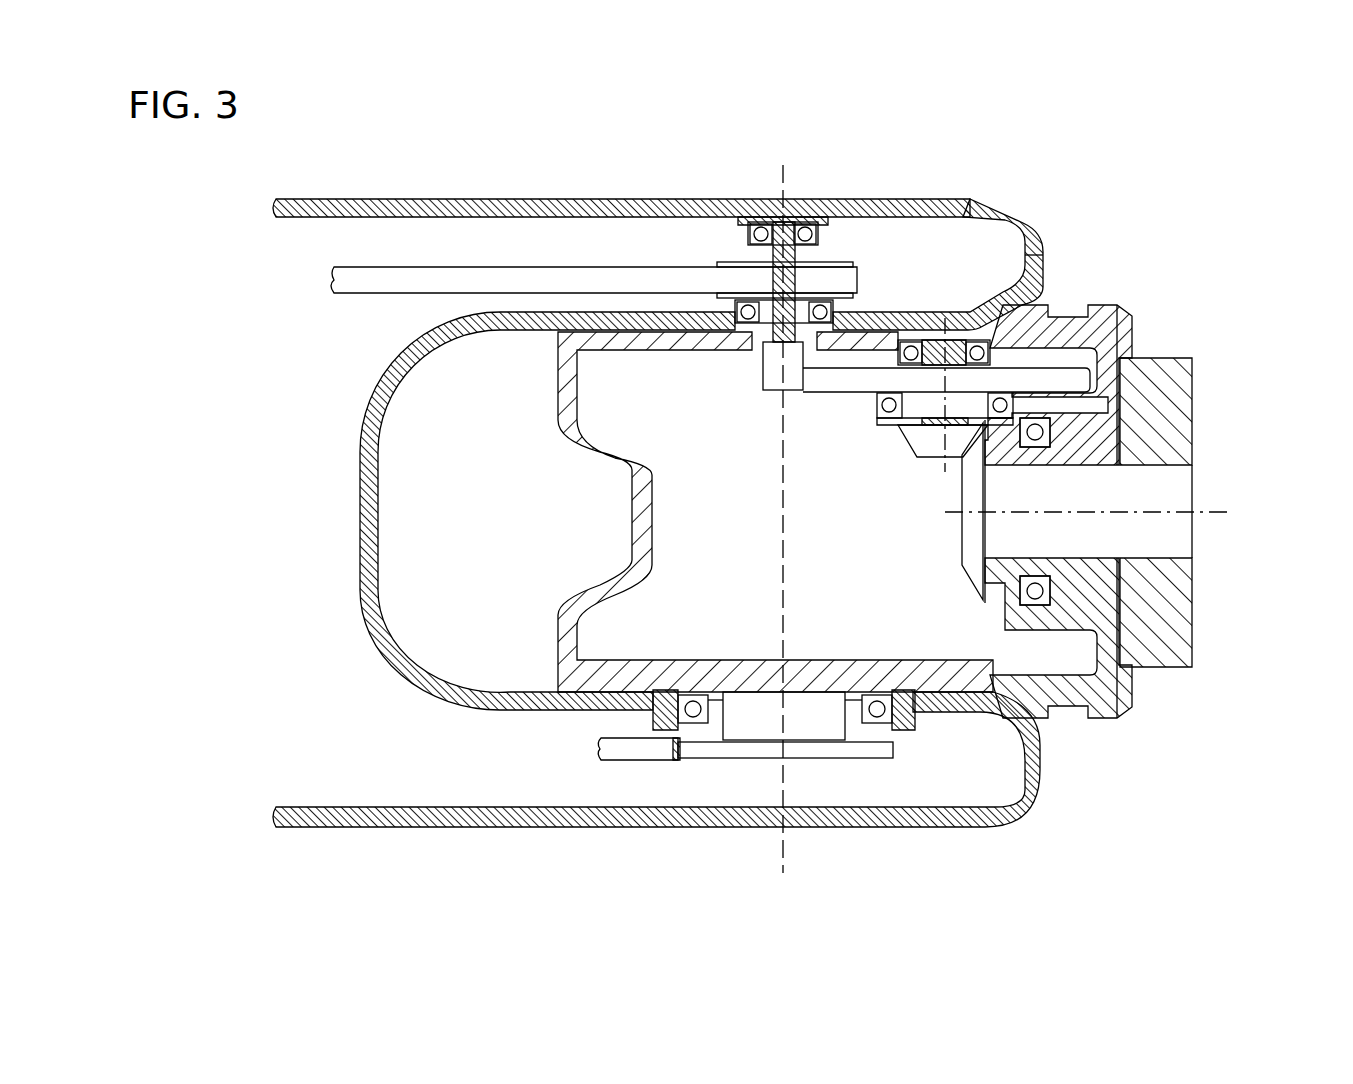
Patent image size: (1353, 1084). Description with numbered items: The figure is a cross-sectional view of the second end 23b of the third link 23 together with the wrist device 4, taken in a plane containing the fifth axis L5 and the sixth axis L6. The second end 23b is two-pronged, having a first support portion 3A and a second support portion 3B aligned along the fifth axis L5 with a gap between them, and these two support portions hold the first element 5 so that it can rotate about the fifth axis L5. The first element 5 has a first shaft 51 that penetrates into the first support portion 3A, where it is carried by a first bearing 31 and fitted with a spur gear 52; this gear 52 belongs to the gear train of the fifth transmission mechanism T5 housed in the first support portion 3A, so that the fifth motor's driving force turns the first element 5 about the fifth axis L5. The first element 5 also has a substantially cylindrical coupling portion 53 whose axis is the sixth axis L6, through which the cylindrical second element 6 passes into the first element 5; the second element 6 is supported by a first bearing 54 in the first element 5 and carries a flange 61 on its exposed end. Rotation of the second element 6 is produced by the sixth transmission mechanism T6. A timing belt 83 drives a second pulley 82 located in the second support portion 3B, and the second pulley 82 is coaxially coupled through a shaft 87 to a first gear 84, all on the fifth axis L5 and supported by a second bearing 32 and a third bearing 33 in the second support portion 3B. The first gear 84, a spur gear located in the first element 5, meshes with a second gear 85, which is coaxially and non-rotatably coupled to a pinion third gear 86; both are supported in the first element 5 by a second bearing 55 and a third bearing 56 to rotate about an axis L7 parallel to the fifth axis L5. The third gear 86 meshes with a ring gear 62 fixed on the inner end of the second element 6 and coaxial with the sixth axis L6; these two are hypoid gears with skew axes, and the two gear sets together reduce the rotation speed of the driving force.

The second end 23b is at (465, 197).
The third link 23 is at (621, 152).
The second support portion 3B is at (1000, 210).
The first support portion 3A is at (893, 828).
The sixth transmission mechanism T6 is at (906, 250).
The fifth transmission mechanism T5 is at (638, 762).
The first element 5 is at (564, 614).
The shaft 87 is at (797, 252).
The second bearing 32 is at (742, 228).
The second pulley 82 is at (720, 262).
The timing belt 83 is at (362, 295).
The third bearing 33 is at (835, 312).
The first gear 84 is at (762, 370).
The second gear 85 is at (825, 392).
The second bearing 55 is at (975, 340).
The third bearing 56 is at (885, 418).
The third gear 86 is at (918, 457).
The gear 62 is at (965, 570).
The axis L7 is at (945, 468).
The fifth axis L5 is at (780, 512).
The sixth axis L6 is at (1225, 508).
The wrist device 4 is at (1110, 542).
The coupling portion 53 is at (1102, 305).
The first bearing 54 is at (1020, 590).
The second element 6 is at (1200, 464).
The flange 61 is at (1192, 600).
The first shaft 51 is at (875, 735).
The first bearing 31 is at (694, 695).
The gear 52 is at (750, 760).